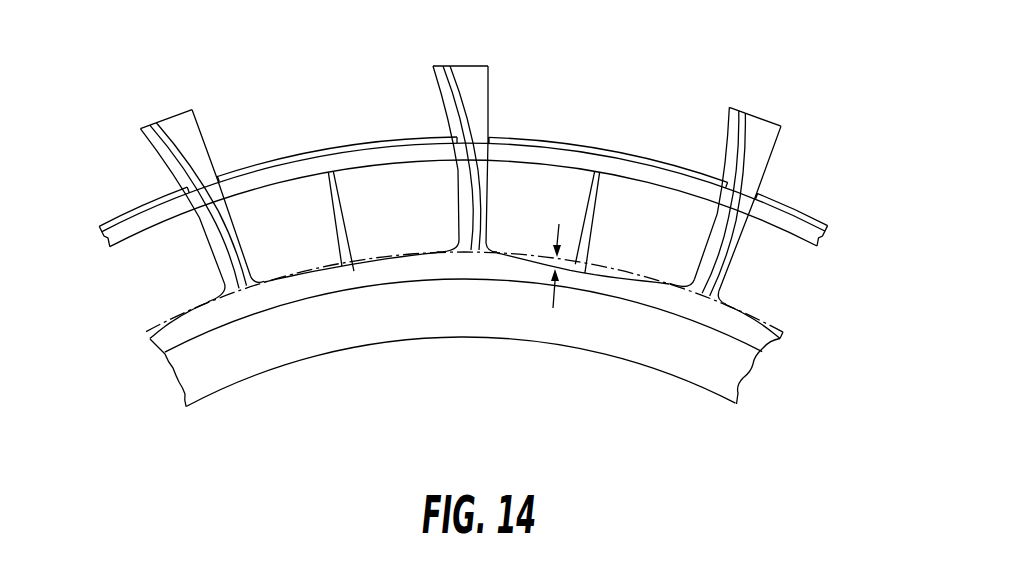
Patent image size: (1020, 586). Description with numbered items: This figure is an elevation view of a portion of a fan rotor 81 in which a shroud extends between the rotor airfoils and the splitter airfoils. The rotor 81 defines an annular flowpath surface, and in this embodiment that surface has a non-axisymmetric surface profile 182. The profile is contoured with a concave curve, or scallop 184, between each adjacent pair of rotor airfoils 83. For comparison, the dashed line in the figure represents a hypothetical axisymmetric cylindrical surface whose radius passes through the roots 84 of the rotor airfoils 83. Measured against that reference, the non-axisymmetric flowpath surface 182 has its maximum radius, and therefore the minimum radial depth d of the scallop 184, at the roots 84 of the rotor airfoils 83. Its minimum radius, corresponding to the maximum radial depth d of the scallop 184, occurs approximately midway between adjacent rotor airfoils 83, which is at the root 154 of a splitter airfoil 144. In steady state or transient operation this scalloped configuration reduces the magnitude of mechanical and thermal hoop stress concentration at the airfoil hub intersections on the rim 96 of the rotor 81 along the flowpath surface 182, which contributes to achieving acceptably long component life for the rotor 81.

The rotor airfoil 83 is at (488, 51).
The root 84 is at (487, 252).
The splitter airfoil 144 is at (330, 151).
The scallop 184 is at (291, 279).
The non-axisymmetric surface profile 182 is at (768, 313).
The rotor 81 is at (593, 333).
The rim 96 is at (731, 371).
The root of splitter airfoil 154 is at (345, 268).
The radial depth d is at (552, 294).